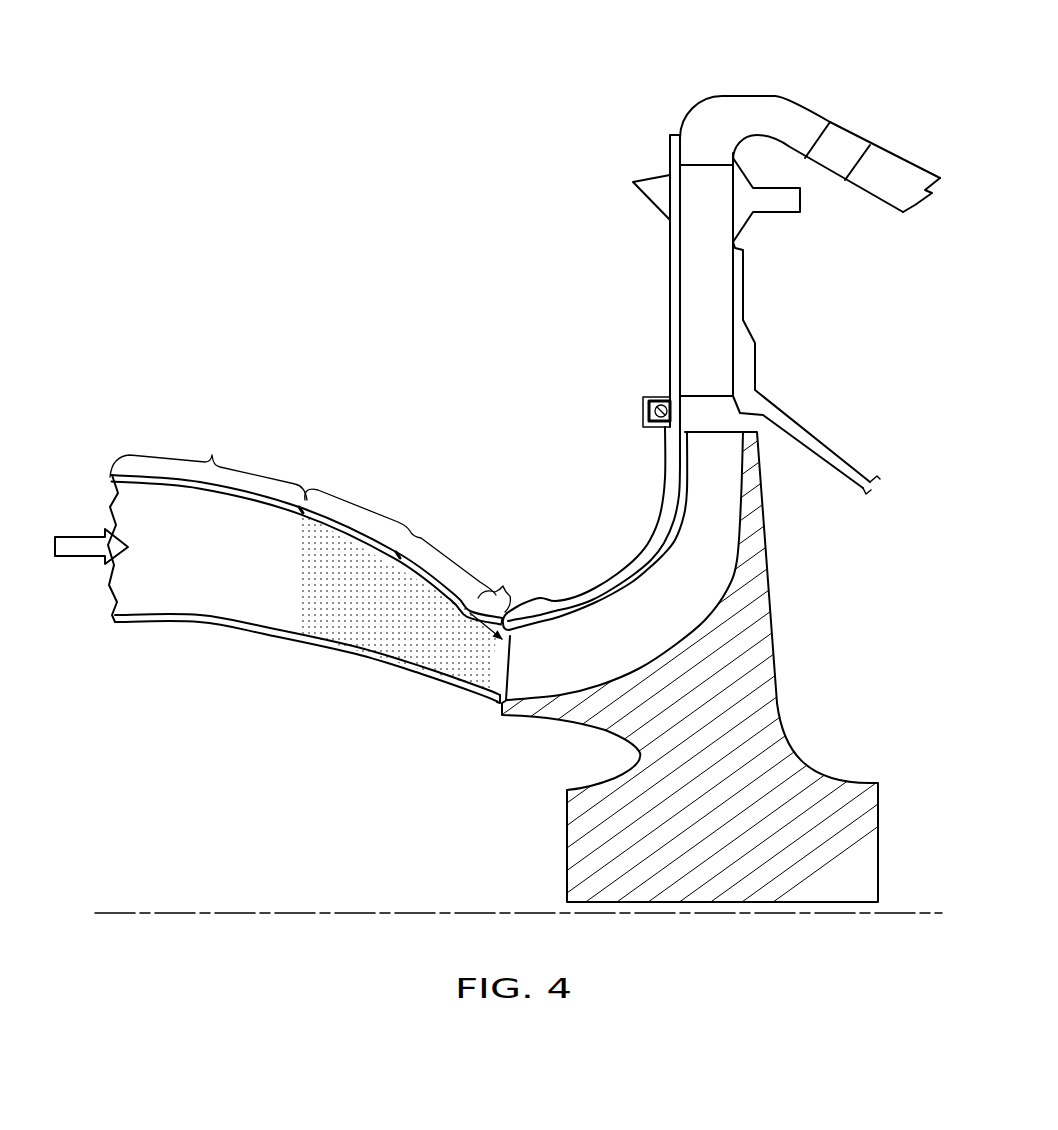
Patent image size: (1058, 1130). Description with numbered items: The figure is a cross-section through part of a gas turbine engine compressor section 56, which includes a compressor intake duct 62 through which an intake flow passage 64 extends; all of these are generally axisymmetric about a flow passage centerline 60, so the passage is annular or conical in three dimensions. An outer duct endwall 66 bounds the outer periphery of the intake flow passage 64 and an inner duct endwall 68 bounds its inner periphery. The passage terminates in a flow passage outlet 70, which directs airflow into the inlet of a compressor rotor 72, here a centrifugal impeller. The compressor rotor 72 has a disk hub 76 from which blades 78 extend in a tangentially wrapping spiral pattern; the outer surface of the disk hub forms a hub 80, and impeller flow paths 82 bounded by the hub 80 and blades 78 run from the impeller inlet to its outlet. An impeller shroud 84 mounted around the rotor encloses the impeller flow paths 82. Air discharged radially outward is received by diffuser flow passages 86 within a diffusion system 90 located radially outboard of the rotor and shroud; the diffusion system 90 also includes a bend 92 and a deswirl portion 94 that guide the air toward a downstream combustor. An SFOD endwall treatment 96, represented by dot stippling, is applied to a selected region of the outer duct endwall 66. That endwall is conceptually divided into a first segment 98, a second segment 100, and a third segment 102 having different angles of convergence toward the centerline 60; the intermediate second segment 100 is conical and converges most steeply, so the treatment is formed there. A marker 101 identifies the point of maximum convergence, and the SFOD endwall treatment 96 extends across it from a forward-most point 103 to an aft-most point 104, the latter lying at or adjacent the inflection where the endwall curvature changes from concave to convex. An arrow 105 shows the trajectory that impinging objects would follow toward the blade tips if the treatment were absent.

The GTE compressor section 56 is at (95, 440).
The flow passage centerline 60 is at (152, 912).
The compressor intake duct 62 is at (240, 640).
The intake flow passage 64 is at (205, 586).
The outer duct endwall 66 is at (218, 492).
The inner duct endwall 68 is at (380, 656).
The flow passage outlet 70 is at (490, 690).
The compressor rotor 72 is at (782, 672).
The disk hub 76 is at (735, 793).
The blades 78 is at (632, 602).
The hub 80 is at (723, 595).
The impeller flow paths 82 is at (676, 625).
The impeller shroud 84 is at (650, 542).
The diffuser flow passages 86 is at (723, 302).
The diffusion system 90 is at (668, 125).
The bend 92 is at (806, 120).
The deswirl portion 94 is at (853, 135).
The SFOD endwall treatment 96 is at (345, 623).
The first segment 98 is at (208, 461).
The second segment 100 is at (400, 542).
The marker 101 is at (398, 553).
The third segment 102 is at (510, 593).
The forward-most point 103 is at (302, 508).
The aft-most point 104 is at (468, 610).
The arrow 105 is at (466, 630).